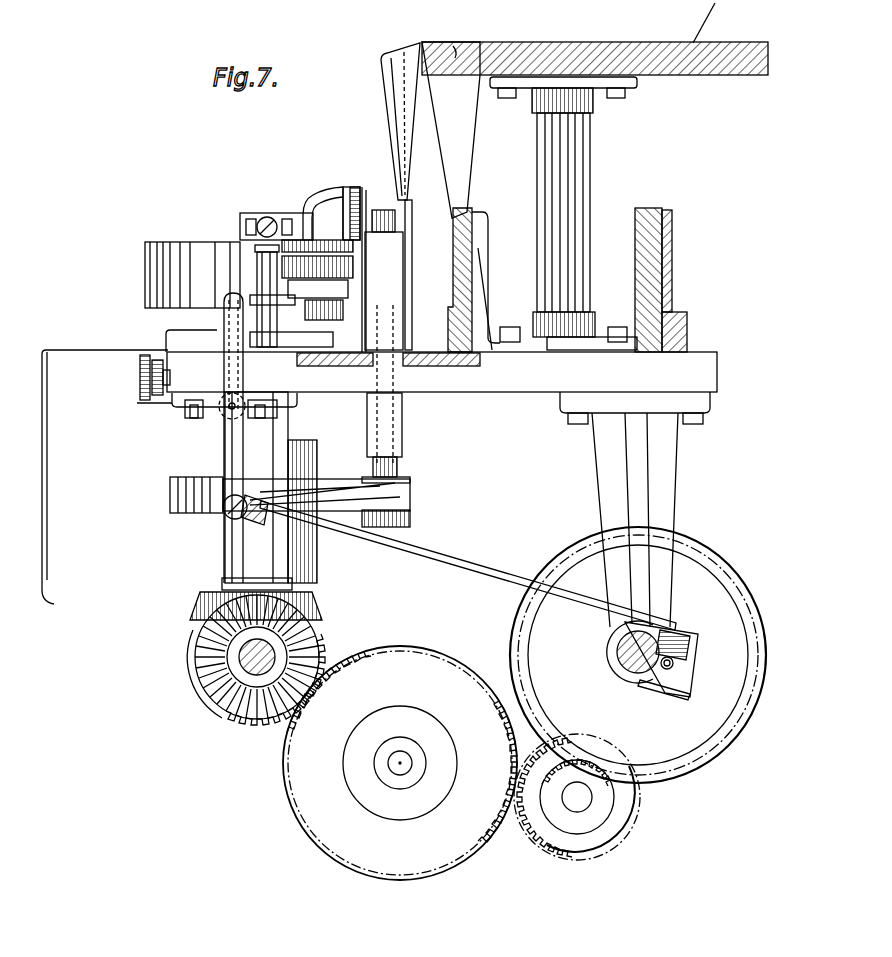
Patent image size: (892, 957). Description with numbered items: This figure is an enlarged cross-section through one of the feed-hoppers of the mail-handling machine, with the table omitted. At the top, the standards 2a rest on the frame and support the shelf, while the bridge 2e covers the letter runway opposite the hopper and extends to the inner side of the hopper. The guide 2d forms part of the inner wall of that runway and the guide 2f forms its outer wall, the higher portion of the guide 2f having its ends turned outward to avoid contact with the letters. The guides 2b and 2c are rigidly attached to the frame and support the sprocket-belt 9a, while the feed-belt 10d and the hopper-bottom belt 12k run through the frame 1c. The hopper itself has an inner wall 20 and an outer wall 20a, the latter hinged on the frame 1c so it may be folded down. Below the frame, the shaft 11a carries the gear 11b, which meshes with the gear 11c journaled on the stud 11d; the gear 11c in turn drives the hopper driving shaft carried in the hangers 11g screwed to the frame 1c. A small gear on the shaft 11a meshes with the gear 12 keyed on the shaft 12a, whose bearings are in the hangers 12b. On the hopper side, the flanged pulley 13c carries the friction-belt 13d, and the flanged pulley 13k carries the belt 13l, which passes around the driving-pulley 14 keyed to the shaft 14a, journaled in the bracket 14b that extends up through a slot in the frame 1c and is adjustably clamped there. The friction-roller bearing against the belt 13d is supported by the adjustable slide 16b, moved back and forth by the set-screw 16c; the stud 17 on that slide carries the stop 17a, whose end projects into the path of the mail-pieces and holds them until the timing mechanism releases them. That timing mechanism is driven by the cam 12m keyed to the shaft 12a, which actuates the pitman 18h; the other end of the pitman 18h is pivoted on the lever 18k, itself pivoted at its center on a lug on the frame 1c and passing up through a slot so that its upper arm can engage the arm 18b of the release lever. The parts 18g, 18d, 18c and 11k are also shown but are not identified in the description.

The bridge 2e is at (463, 42).
The guide 2d is at (465, 146).
The standards 2a is at (588, 210).
The guide 2c is at (635, 238).
The sprocket-belt 9a is at (453, 253).
The guide 2b is at (478, 252).
The guide 2f is at (412, 202).
The inner wall of the hopper 20 is at (402, 168).
The pitman 18h is at (345, 186).
The stop 17a is at (327, 186).
The friction-belt 13d is at (158, 258).
The flanged pulley 13c is at (182, 257).
The stud 17 is at (257, 281).
The adjustable slide 16b is at (290, 338).
The belt 12k is at (330, 354).
The feed-belt 10d is at (448, 354).
The frame 1c is at (682, 372).
The set-screw 16c is at (142, 380).
The nut 18g is at (155, 402).
The arm of the lever 18b is at (215, 400).
The lever 18k is at (232, 450).
The belt 13l is at (312, 490).
The bracket 14b is at (402, 408).
The shaft 14a is at (385, 432).
The driving-pulley 14 is at (408, 518).
The flanged pulley 13k is at (195, 513).
The hangers 12b is at (665, 487).
The outer wall of the hopper 20a is at (45, 522).
The hangers 11g is at (310, 557).
The shaft 11a is at (257, 713).
The gear 11b is at (240, 660).
The pinion 11k is at (587, 823).
The gear 11c is at (408, 855).
The stud 11d is at (398, 766).
The gear 12 is at (683, 762).
The shaft 12a is at (642, 667).
The cam 12m is at (670, 624).
The pivot screw 18d is at (673, 663).
The clamp plate 18c is at (672, 688).